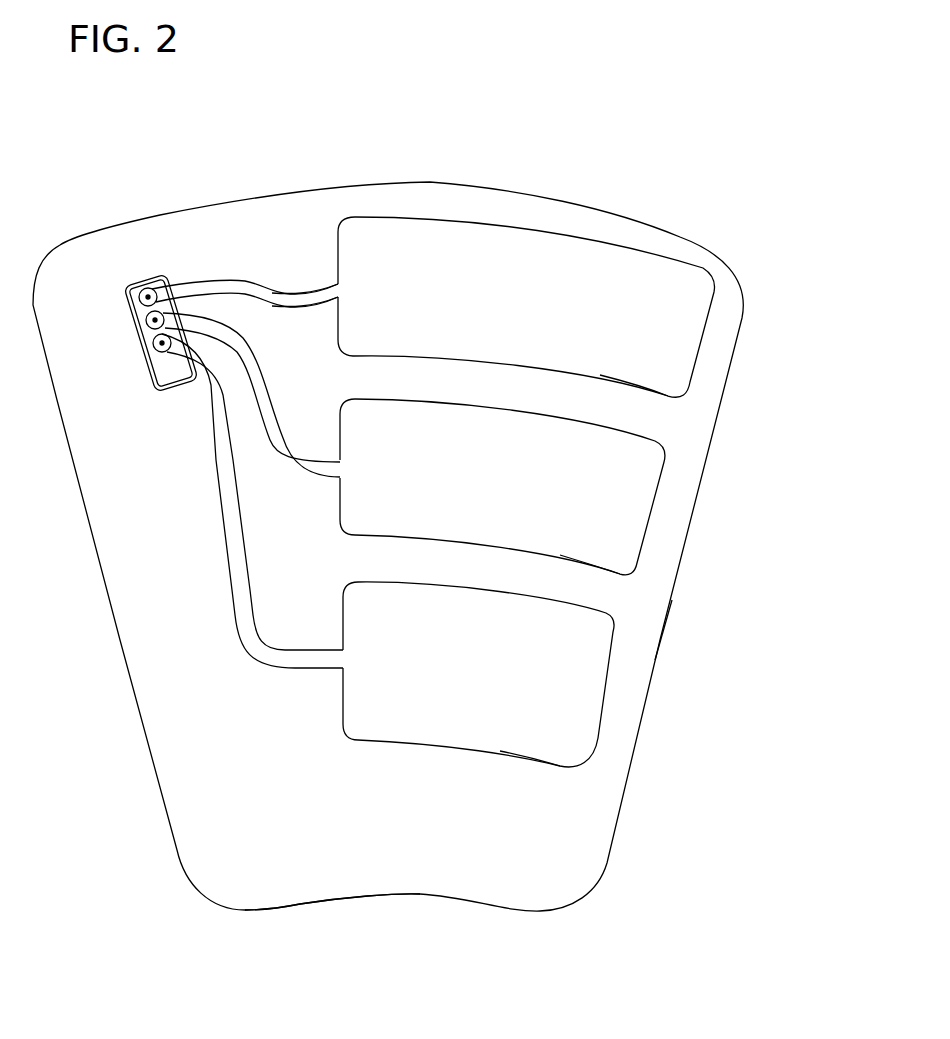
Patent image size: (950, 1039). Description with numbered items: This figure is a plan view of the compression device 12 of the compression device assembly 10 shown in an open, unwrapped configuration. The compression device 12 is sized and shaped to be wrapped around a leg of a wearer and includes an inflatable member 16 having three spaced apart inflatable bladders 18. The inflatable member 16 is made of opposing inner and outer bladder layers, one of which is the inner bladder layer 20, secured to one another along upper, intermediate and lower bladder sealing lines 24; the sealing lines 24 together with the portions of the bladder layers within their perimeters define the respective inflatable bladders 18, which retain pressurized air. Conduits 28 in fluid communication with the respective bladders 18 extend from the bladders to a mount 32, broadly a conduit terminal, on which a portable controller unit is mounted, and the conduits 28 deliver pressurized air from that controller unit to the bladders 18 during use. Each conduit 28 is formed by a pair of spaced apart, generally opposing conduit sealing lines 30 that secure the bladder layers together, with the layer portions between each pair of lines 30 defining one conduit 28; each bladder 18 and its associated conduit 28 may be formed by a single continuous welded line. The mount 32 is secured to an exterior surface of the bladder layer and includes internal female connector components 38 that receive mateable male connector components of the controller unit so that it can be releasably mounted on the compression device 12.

The compression device assembly 10 is at (388, 490).
The compression device 12 is at (626, 204).
The inflatable member 16 is at (647, 700).
The inflatable bladders 18 is at (670, 362).
The inner bladder layer 20 is at (345, 868).
The bladder sealing lines 24 is at (645, 393).
The conduits 28 is at (218, 287).
The conduit sealing lines 30 is at (288, 300).
The mount 32 is at (135, 287).
The female connector components 38 is at (161, 352).